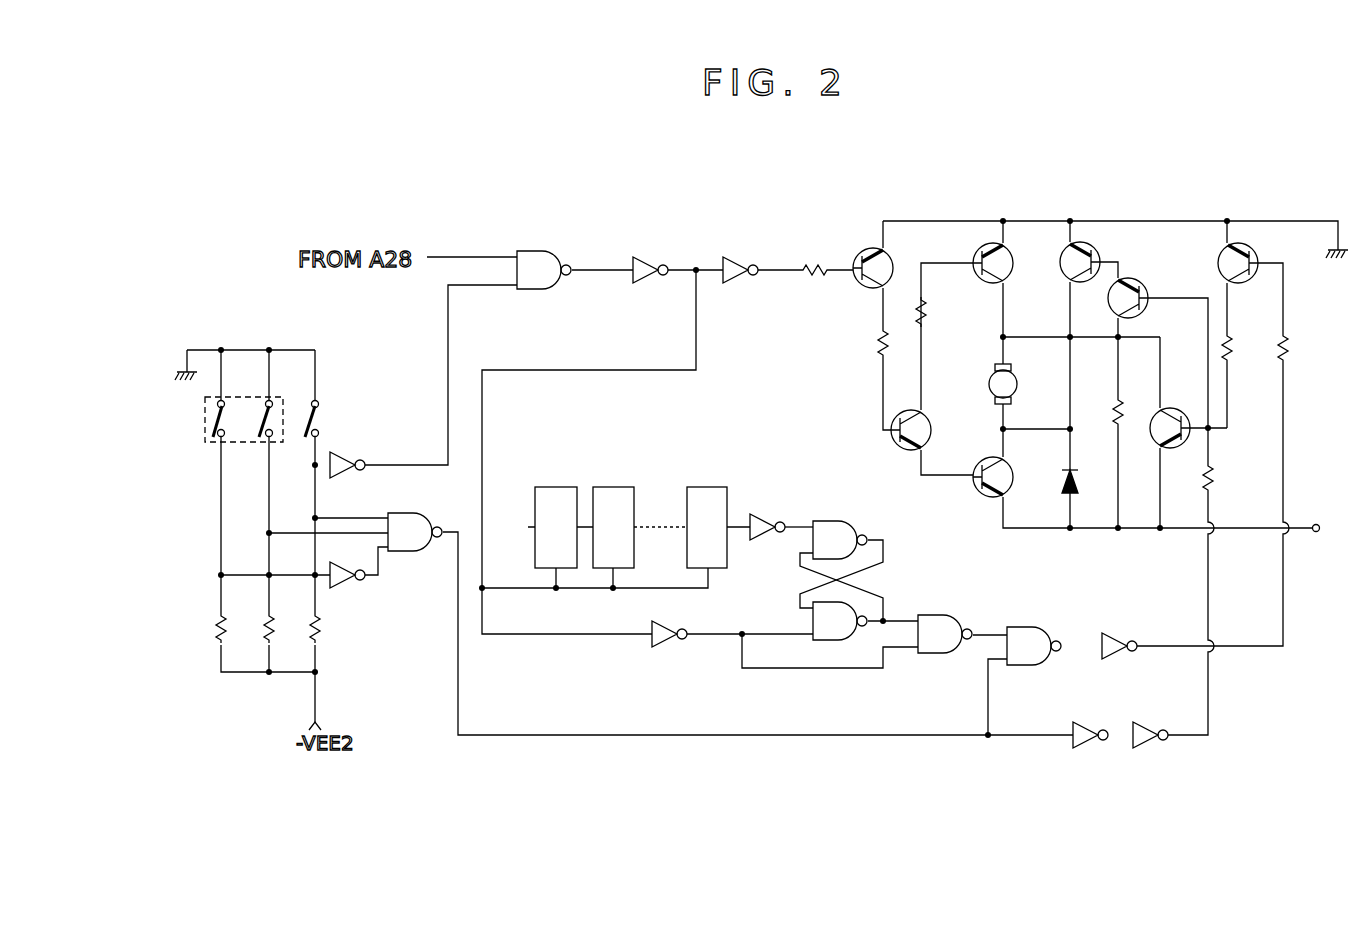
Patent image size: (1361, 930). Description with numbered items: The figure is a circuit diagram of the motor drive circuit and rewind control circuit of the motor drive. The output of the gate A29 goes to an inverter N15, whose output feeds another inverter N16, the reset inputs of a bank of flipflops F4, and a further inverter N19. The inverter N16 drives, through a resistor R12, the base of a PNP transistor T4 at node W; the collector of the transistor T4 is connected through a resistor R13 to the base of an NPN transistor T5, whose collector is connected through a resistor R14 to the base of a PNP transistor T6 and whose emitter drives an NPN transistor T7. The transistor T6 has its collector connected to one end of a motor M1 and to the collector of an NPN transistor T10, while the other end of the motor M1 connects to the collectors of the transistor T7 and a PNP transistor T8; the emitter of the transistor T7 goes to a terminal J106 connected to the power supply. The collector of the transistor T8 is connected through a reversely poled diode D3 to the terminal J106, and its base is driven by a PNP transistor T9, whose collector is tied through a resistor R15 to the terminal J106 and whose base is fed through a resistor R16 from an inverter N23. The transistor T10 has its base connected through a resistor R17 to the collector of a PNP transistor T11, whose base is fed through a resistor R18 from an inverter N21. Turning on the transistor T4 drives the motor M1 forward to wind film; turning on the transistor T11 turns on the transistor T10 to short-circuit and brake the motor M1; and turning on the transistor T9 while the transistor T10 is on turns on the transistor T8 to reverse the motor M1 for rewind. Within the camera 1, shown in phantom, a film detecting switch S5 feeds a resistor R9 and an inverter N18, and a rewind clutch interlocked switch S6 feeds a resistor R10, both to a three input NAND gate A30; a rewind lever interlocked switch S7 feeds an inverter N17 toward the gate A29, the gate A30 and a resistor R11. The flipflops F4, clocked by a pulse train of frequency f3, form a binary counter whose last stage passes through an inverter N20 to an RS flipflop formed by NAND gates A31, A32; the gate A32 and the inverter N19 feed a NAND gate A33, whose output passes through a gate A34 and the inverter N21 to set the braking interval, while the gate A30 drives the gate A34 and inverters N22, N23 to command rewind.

The film detecting switch S5 is at (205, 426).
The rewind clutch interlocked switch S6 is at (258, 418).
The rewind lever interlocked switch S7 is at (326, 416).
The camera 1 is at (212, 446).
The resistor R9 is at (216, 622).
The resistor R10 is at (266, 636).
The resistor R11 is at (320, 632).
The inverter N17 is at (345, 458).
The inverter N18 is at (347, 580).
The three input NAND gate A30 is at (410, 520).
The gate A29 is at (534, 258).
The inverter N15 is at (653, 262).
The inverter N16 is at (743, 262).
The signal node W is at (770, 253).
The resistor R12 is at (820, 276).
The PNP transistor T4 is at (875, 252).
The resistor R13 is at (878, 340).
The NPN transistor T5 is at (931, 430).
The resistor R14 is at (928, 312).
The PNP transistor T6 is at (986, 250).
The motor M1 is at (1013, 378).
The NPN transistor T7 is at (1013, 478).
The PNP transistor T8 is at (1062, 258).
The PNP transistor T9 is at (1132, 282).
The resistor R15 is at (1115, 406).
The reversely poled diode D3 is at (1080, 482).
The NPN transistor T10 is at (1178, 412).
The resistor R16 is at (1214, 478).
The PNP transistor T11 is at (1220, 256).
The resistor R17 is at (1232, 344).
The resistor R18 is at (1290, 348).
The terminal J106 is at (1341, 529).
The bank of flipflops F4 is at (722, 478).
The frequency of the pulse train f3 is at (511, 529).
The inverter N19 is at (662, 644).
The inverter N20 is at (764, 516).
The NAND gate A31 is at (836, 520).
The NAND gate A32 is at (826, 640).
The NAND gate A33 is at (940, 624).
The gate A34 is at (1030, 634).
The inverter N21 is at (1120, 640).
The inverter N22 is at (1090, 730).
The inverter N23 is at (1150, 730).